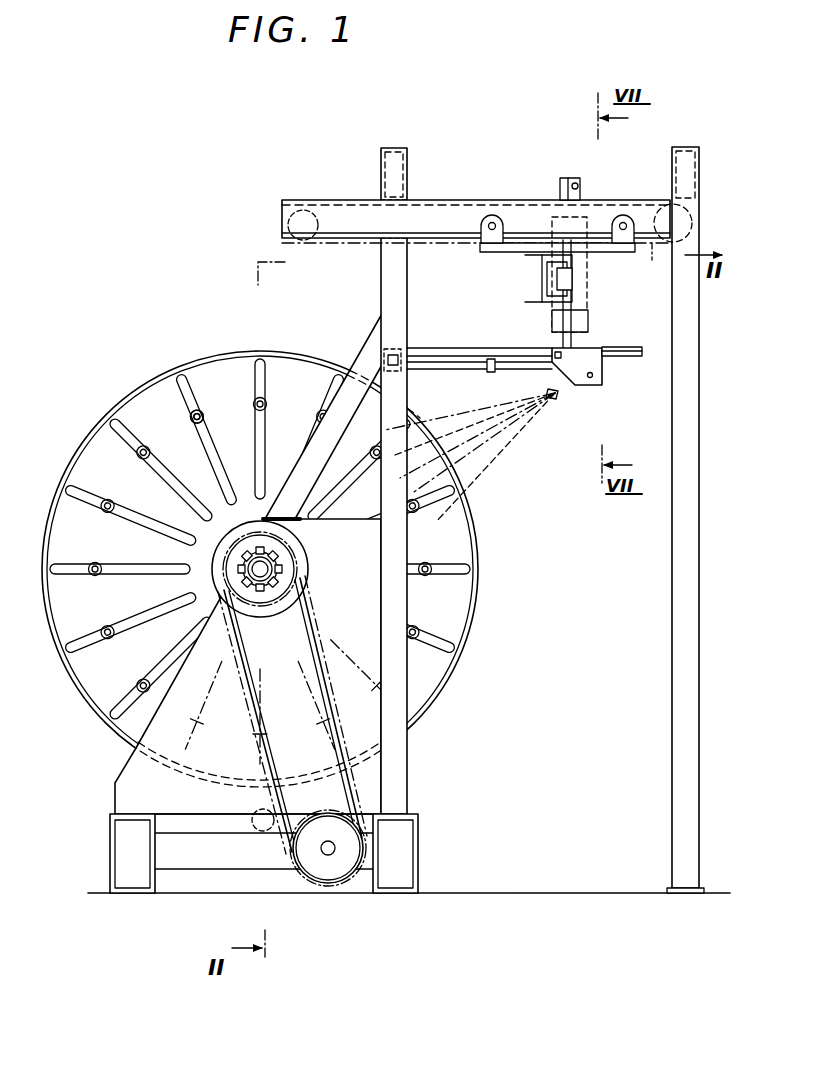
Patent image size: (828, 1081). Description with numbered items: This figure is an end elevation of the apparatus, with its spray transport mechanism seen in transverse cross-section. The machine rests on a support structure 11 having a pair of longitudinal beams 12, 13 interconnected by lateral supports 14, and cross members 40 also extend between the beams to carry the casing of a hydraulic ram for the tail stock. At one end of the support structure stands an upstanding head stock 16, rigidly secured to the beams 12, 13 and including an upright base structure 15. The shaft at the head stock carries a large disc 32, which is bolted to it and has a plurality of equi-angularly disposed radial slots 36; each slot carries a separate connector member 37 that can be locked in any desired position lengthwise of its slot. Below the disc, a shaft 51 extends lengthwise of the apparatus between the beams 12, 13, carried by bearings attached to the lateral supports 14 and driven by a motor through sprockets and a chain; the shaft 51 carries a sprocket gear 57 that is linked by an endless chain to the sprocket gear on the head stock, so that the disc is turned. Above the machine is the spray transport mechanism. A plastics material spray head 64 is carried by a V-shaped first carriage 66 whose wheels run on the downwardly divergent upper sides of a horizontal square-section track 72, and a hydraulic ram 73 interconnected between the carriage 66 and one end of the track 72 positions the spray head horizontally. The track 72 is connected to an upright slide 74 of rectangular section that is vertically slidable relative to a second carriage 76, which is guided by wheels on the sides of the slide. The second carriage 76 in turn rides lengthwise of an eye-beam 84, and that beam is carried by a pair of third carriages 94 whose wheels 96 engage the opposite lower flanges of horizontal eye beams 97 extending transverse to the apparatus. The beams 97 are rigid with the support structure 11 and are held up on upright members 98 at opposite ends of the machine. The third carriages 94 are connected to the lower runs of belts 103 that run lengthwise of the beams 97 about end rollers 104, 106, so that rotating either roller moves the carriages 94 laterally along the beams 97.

The support structure 11 is at (195, 878).
The longitudinal beam 12 is at (135, 896).
The longitudinal beam 13 is at (388, 893).
The lateral supports 14 is at (228, 887).
The upright base structure 15 is at (115, 793).
The head stock 16 is at (412, 778).
The disc 32 is at (70, 688).
The radial slots 36 is at (72, 490).
The connector member 37 is at (202, 412).
The cross members 40 is at (250, 860).
The shaft 51 is at (328, 855).
The sprocket gear 57 is at (346, 823).
The plastics material spray head 64 is at (558, 394).
The first carriage 66 is at (604, 380).
The track 72 is at (640, 348).
The hydraulic ram 73 is at (418, 360).
The upright slide 74 is at (563, 178).
The second carriage 76 is at (592, 282).
The eye-beam 84 is at (540, 303).
The third carriages 94 is at (505, 254).
The wheels 96 is at (483, 218).
The horizontal eye beams 97 is at (625, 205).
The upright members 98 is at (400, 483).
The belts 103 is at (652, 245).
The end roller 104 is at (303, 240).
The end roller 106 is at (704, 190).